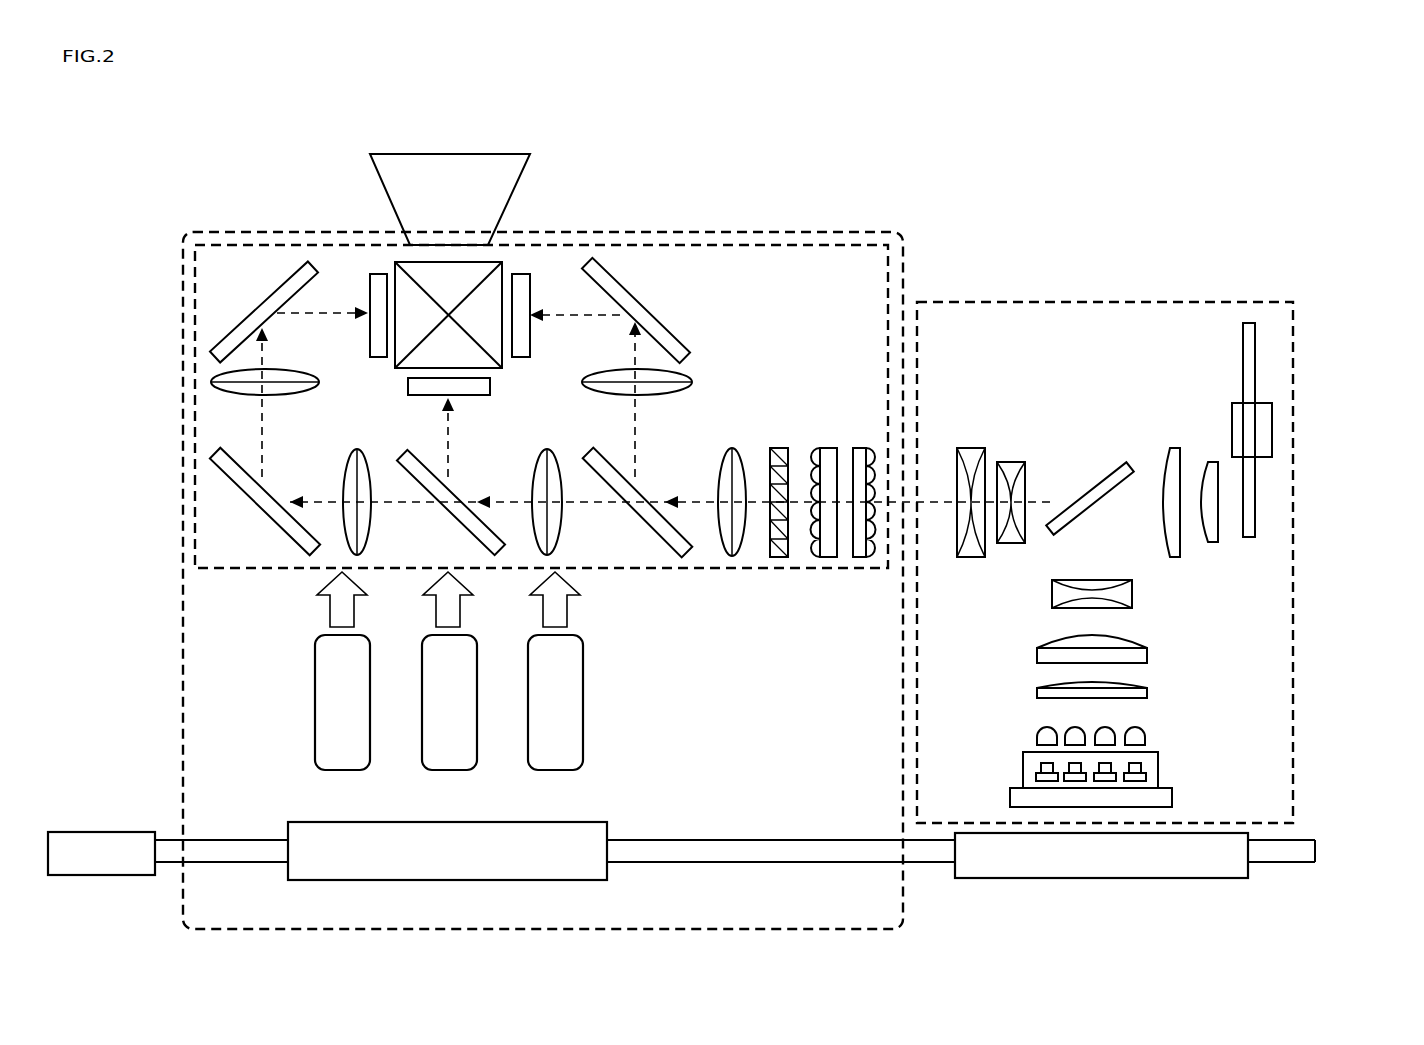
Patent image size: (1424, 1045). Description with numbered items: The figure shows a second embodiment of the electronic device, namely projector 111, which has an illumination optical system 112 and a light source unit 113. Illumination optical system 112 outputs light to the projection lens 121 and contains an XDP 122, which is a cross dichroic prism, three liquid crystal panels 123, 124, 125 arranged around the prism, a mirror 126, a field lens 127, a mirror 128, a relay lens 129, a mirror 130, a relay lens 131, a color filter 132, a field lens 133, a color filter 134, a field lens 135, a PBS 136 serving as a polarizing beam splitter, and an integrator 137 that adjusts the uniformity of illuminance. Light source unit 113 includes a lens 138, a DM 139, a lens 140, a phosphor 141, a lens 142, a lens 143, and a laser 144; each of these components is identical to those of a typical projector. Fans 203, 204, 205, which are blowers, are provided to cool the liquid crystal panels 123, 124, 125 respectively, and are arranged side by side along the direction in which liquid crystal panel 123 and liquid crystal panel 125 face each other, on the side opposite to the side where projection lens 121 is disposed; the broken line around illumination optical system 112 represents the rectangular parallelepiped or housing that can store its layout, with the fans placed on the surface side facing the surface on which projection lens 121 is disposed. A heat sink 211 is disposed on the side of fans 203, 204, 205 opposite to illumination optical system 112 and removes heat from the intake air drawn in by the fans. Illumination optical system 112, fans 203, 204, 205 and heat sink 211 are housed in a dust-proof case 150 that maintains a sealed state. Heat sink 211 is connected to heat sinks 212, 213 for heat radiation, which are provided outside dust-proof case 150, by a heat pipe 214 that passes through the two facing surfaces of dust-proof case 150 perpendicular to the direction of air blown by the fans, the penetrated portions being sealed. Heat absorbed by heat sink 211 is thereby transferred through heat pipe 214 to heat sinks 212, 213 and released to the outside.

The projector 111 is at (1032, 177).
The illumination optical system 112 is at (312, 232).
The light source unit 113 is at (1208, 302).
The projection lens 121 is at (503, 160).
The XDP 122 is at (500, 262).
The liquid crystal panel 123 is at (520, 285).
The liquid crystal panel 124 is at (440, 380).
The liquid crystal panel 125 is at (380, 280).
The mirror 126 is at (627, 290).
The field lens 127 is at (693, 380).
The mirror 128 is at (273, 300).
The relay lens 129 is at (213, 377).
The mirror 130 is at (217, 457).
The relay lens 131 is at (347, 450).
The color filter 132 is at (402, 457).
The field lens 133 is at (547, 448).
The color filter 134 is at (660, 535).
The field lens 135 is at (732, 448).
The PBS 136 is at (782, 560).
The integrator 137 is at (843, 565).
The lens 138 is at (1037, 440).
The DM 139 is at (1092, 490).
The lens 140 is at (1222, 440).
The phosphor 141 is at (1257, 497).
The lens 142 is at (1155, 710).
The lens 143 is at (1157, 735).
The laser 144 is at (1152, 780).
The dust-proof case 150 is at (848, 232).
The fan 203 is at (565, 739).
The fan 204 is at (433, 747).
The fan 205 is at (330, 675).
The heat sink 211 is at (605, 832).
The heat sink 212 is at (1037, 872).
The heat sink 213 is at (68, 869).
The heat pipe 214 is at (750, 852).